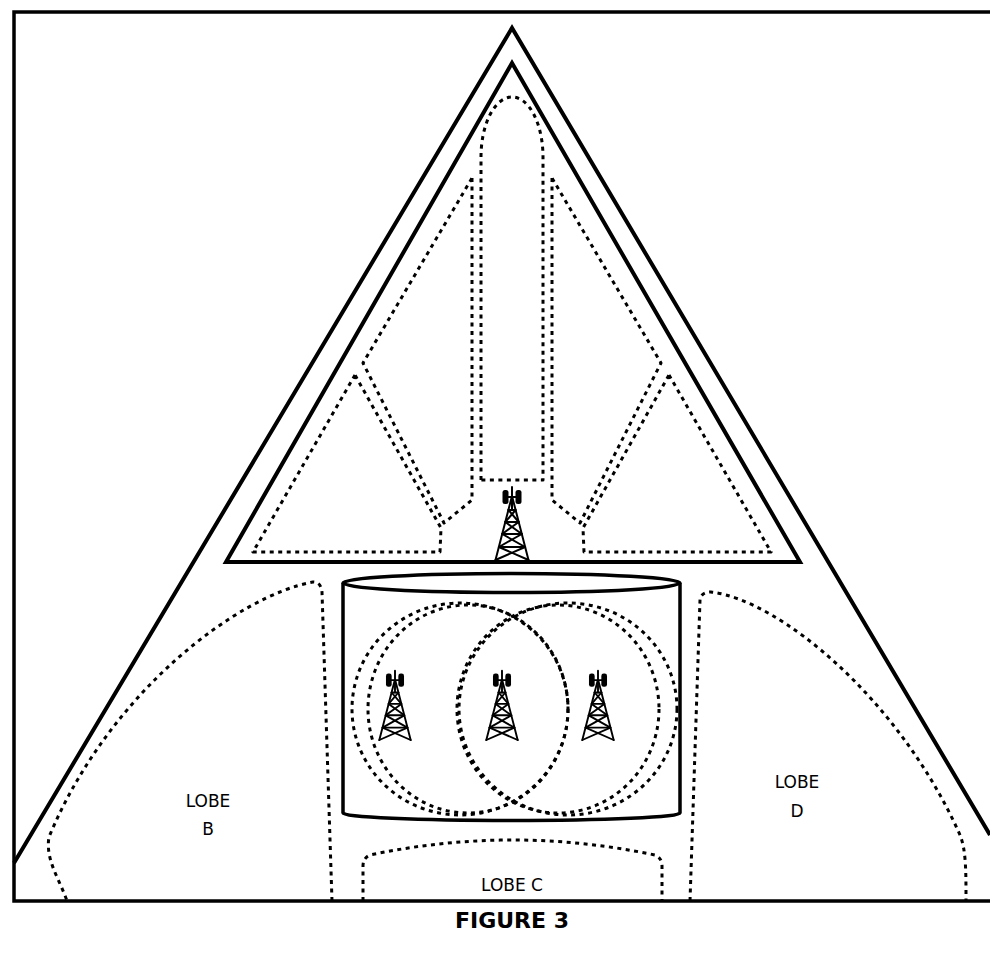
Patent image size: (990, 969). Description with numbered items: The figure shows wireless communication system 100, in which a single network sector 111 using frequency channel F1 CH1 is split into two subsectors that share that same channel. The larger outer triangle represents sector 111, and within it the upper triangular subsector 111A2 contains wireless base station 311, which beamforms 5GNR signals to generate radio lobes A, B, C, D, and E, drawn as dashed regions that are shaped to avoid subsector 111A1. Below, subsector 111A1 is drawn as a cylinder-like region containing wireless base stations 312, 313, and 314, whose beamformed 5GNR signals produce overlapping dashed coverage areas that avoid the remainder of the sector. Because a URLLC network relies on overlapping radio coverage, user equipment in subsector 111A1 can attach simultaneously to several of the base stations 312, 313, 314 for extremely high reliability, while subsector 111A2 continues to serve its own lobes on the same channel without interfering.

The wireless communication system 100 is at (502, 456).
The sector 111 is at (590, 160).
The subsector 111A2 is at (672, 338).
The subsector 111A1 is at (680, 648).
The wireless base station 311 is at (527, 550).
The wireless base station 312 is at (409, 735).
The wireless base station 313 is at (516, 735).
The wireless base station 314 is at (611, 722).